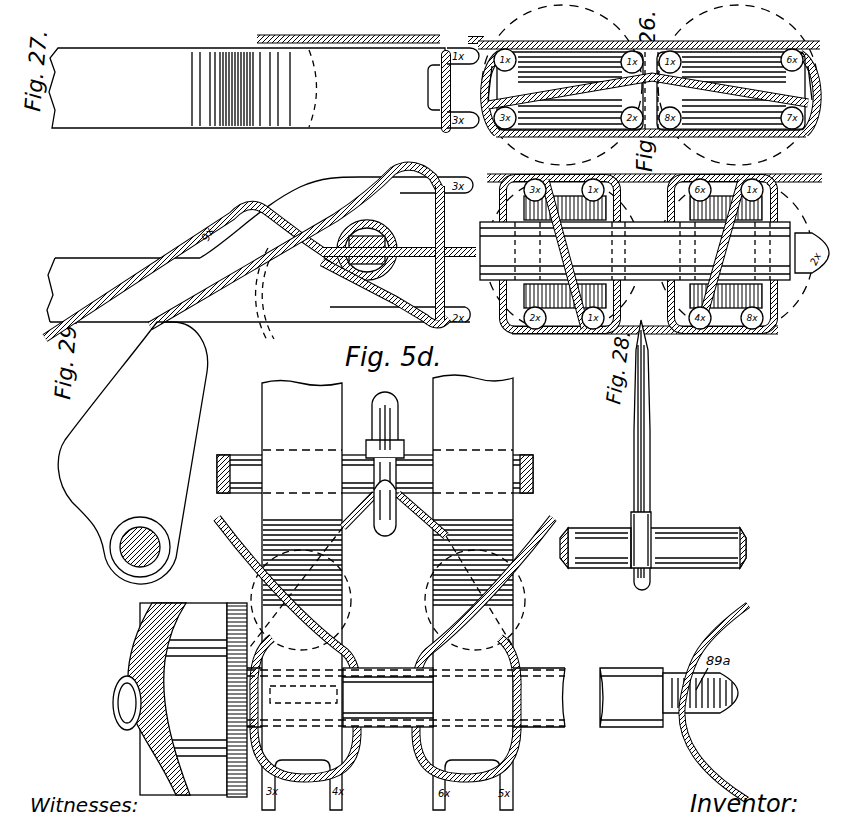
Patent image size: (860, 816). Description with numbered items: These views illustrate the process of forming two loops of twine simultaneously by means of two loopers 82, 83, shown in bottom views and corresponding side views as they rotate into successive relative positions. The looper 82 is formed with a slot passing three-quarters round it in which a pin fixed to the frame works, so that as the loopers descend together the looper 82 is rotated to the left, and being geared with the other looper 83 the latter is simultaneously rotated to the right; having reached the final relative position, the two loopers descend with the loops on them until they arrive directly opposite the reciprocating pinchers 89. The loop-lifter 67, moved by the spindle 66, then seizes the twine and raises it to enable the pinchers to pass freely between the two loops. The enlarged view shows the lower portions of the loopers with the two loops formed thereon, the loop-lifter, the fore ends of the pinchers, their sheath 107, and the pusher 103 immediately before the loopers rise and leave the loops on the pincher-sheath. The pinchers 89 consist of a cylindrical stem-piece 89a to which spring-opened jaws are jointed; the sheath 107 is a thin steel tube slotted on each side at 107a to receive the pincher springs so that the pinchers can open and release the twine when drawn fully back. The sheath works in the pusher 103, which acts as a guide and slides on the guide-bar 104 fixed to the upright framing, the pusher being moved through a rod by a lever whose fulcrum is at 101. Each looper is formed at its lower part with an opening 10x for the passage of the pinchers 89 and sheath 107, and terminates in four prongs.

In FIG. 27, the looper 82 is at (247, 88).
In FIG. 26, the looper 82 is at (570, 181).
In FIG. 29, the looper 82 is at (258, 290).
In FIG. 5D, the looper 82 is at (302, 596).
In FIG. 26, the looper 83 is at (731, 180).
In FIG. 5D, the looper 83 is at (473, 592).
In FIG. 29, the spindle 66 is at (145, 535).
In FIG. 28, the spindle 66 is at (653, 533).
In FIG. 5D, the spindle 66 is at (375, 462).
In FIG. 29, the loop-lifter 67 is at (152, 425).
In FIG. 28, the loop-lifter 67 is at (634, 440).
In FIG. 5D, the loop-lifter 67 is at (393, 464).
In FIG. 26, the fulcrum 101 is at (668, 238).
In FIG. 29, the guide-bar 104 is at (396, 202).
In FIG. 5D, the pusher 103 is at (177, 699).
In FIG. 5D, the sheath 107 is at (455, 697).
In FIG. 5D, the slot 107a is at (303, 694).
In FIG. 5D, the pinchers 89 is at (721, 693).
In FIG. 5D, the stem-piece 89a is at (120, 718).
In FIG. 5D, the opening 10x is at (191, 700).